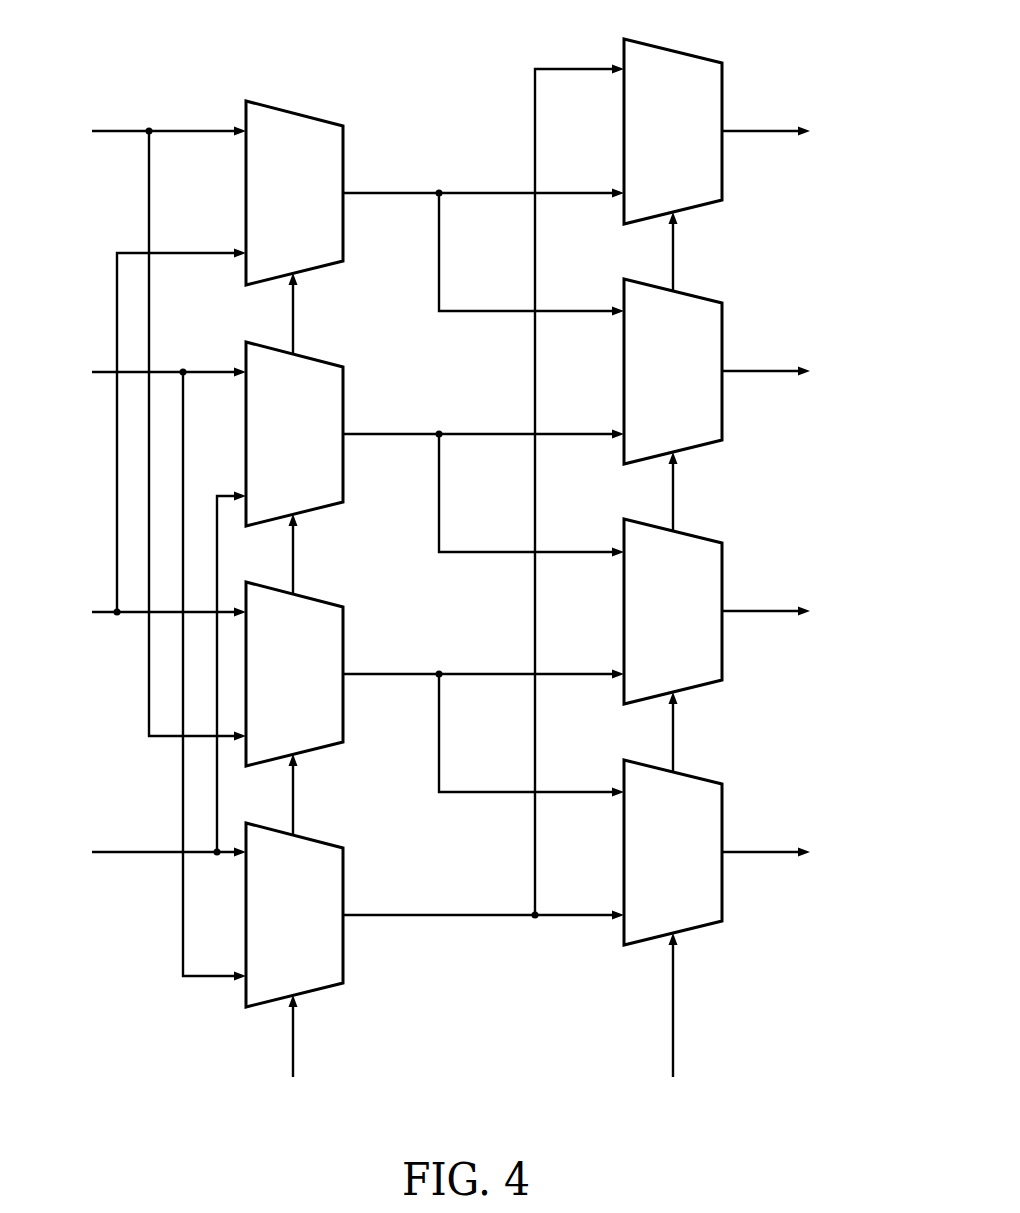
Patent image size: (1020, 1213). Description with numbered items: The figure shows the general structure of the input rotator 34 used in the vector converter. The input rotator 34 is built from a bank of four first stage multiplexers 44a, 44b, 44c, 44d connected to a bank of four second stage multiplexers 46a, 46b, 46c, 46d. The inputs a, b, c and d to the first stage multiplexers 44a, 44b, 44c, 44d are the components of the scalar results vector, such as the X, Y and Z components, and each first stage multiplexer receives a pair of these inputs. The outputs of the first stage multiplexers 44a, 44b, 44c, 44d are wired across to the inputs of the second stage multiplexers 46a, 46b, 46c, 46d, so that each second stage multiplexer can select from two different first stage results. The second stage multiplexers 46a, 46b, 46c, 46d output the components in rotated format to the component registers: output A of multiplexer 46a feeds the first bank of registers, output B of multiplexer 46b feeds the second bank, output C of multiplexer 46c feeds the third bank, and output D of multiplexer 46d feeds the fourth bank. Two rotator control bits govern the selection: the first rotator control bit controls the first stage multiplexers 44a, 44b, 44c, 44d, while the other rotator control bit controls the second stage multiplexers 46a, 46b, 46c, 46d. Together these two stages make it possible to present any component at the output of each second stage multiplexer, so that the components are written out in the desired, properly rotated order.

The input rotator 34 is at (453, 578).
The first stage multiplexer 44a is at (333, 125).
The first stage multiplexer 44b is at (333, 366).
The first stage multiplexer 44c is at (333, 606).
The first stage multiplexer 44d is at (333, 847).
The second stage multiplexer 46a is at (712, 62).
The second stage multiplexer 46b is at (712, 302).
The second stage multiplexer 46c is at (712, 542).
The second stage multiplexer 46d is at (712, 783).